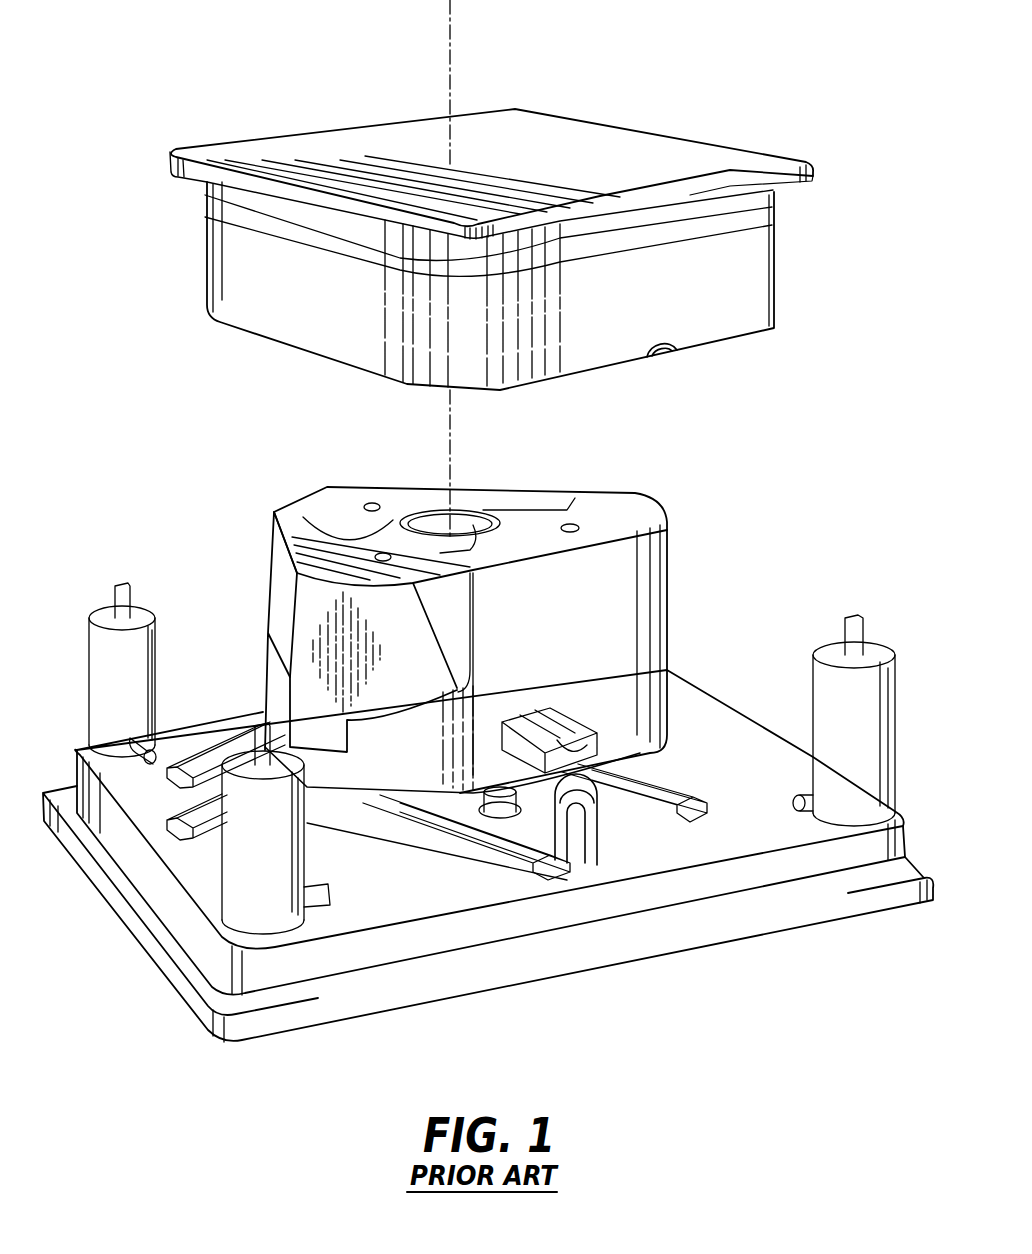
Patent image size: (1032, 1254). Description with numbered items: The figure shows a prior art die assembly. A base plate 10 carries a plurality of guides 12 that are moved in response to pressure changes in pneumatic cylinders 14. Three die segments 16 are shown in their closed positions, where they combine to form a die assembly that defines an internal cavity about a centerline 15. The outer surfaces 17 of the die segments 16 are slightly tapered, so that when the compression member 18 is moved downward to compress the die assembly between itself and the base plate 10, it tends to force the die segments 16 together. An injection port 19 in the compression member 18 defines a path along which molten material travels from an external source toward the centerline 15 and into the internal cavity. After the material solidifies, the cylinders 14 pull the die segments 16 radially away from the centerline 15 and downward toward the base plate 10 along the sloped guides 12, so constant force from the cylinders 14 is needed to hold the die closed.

The base plate 10 is at (367, 998).
The guides 12 is at (392, 833).
The pneumatic cylinders 14 is at (593, 823).
The centerline 15 is at (455, 447).
The die segments 16 is at (298, 540).
The outer surfaces 17 is at (280, 587).
The compression member 18 is at (400, 133).
The injection port 19 is at (652, 352).